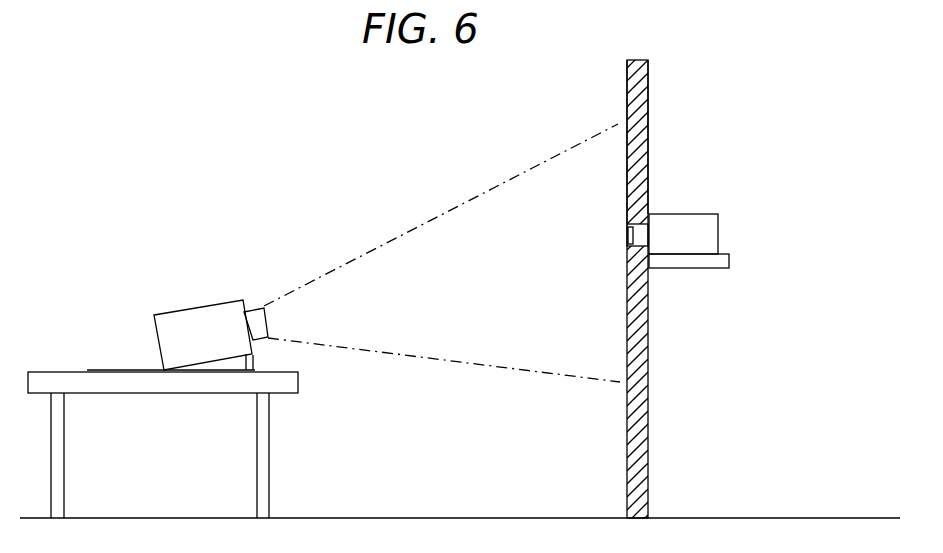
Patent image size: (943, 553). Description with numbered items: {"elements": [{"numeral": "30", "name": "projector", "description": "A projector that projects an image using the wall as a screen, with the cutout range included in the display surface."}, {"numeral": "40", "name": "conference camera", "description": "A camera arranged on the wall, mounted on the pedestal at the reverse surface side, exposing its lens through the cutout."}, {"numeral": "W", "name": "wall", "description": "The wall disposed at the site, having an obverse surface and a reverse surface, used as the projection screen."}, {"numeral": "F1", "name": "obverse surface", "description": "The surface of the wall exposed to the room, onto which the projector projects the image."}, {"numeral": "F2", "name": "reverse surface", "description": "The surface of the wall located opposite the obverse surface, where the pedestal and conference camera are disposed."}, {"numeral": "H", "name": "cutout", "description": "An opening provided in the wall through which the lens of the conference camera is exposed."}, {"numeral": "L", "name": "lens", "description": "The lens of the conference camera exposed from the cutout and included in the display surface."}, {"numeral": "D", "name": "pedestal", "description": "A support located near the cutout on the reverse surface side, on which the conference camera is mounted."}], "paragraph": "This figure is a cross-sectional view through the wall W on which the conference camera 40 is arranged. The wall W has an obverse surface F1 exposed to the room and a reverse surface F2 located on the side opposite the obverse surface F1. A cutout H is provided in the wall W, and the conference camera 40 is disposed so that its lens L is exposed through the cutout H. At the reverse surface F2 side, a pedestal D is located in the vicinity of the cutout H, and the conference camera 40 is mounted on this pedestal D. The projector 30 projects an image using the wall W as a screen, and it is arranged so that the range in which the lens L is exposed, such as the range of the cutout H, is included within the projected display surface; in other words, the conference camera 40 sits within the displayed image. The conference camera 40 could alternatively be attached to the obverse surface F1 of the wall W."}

The projector 30 is at (180, 322).
The imaging device 40 is at (687, 218).
The wall W is at (637, 80).
The first surface of wall F1 is at (627, 110).
The second surface of wall F2 is at (648, 112).
The hole H is at (616, 218).
The lens L is at (627, 240).
The shelf D is at (680, 266).